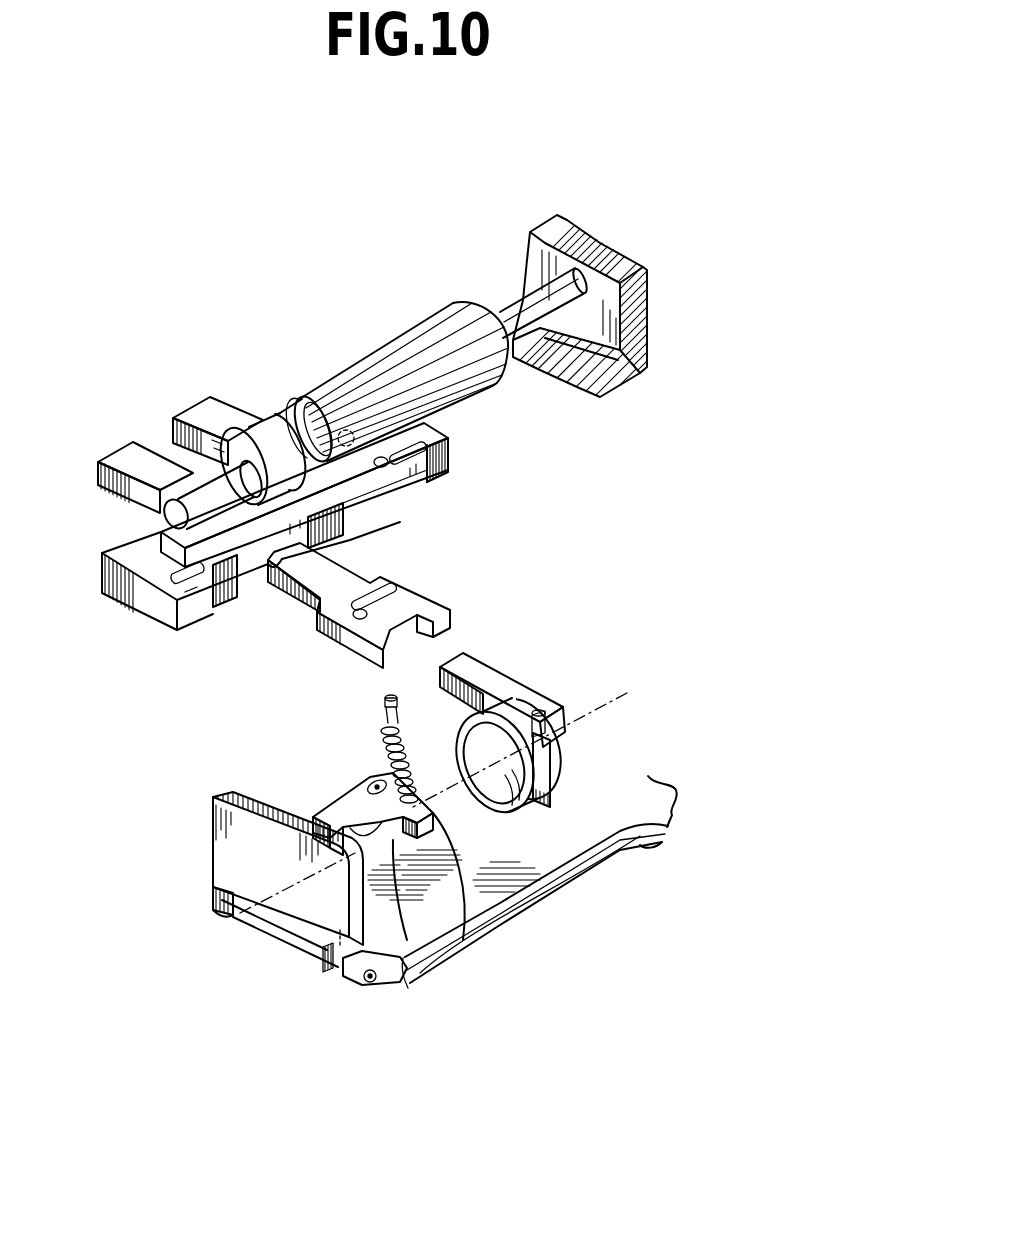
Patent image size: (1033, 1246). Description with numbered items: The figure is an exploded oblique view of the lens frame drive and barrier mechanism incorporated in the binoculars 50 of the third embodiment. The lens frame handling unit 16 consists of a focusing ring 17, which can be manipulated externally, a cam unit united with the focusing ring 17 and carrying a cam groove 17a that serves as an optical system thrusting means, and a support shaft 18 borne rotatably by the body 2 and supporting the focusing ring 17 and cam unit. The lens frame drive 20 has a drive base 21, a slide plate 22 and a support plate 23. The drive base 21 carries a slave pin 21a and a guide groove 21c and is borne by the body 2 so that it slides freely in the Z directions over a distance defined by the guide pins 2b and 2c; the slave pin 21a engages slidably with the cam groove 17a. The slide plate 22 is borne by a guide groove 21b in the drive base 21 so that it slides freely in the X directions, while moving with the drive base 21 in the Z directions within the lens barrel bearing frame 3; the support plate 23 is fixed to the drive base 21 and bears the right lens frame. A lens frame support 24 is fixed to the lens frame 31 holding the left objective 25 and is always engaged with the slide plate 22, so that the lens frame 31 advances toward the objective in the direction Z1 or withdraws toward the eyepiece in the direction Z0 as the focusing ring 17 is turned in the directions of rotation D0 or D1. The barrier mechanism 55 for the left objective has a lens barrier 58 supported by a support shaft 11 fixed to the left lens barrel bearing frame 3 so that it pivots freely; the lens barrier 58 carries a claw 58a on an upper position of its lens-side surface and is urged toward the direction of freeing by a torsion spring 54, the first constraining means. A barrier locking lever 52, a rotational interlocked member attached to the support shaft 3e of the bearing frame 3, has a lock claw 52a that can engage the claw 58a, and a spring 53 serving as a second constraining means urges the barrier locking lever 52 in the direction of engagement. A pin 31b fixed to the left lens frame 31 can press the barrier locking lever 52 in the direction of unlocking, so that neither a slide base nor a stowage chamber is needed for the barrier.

The body 2 is at (612, 247).
The guide pin 2b is at (206, 577).
The guide pin 2c is at (440, 446).
The lens barrel bearing frame 3 is at (641, 812).
The support shaft 3e is at (368, 774).
The support shaft 11 is at (366, 985).
The lens frame handling unit 16 is at (475, 290).
The focusing ring 17 is at (433, 330).
The cam groove 17a is at (298, 400).
The support shaft 18 is at (512, 308).
The lens frame drive 20 is at (126, 608).
The drive base 21 is at (163, 605).
The slave pin 21a is at (349, 430).
The guide groove 21b is at (277, 563).
The guide groove 21c is at (378, 517).
The slide plate 22 is at (131, 442).
The support plate 23 is at (197, 420).
The lens frame support 24 is at (480, 673).
The left objective 25 is at (520, 858).
The lens frame 31 is at (550, 780).
The pin 31b is at (538, 716).
The binoculars 50 is at (370, 296).
The barrier locking lever 52 is at (463, 912).
The lock claw 52a is at (340, 815).
The spring 53 is at (393, 745).
The torsion spring 54 is at (330, 969).
The barrier mechanism 55 is at (250, 938).
The lens barrier 58 is at (293, 917).
The claw 58a is at (423, 945).
The direction of rotation D0 is at (207, 530).
The direction of rotation D1 is at (178, 478).
The directions X is at (313, 680).
The directions Z is at (747, 780).
The direction Z0 is at (838, 732).
The direction Z1 is at (758, 777).